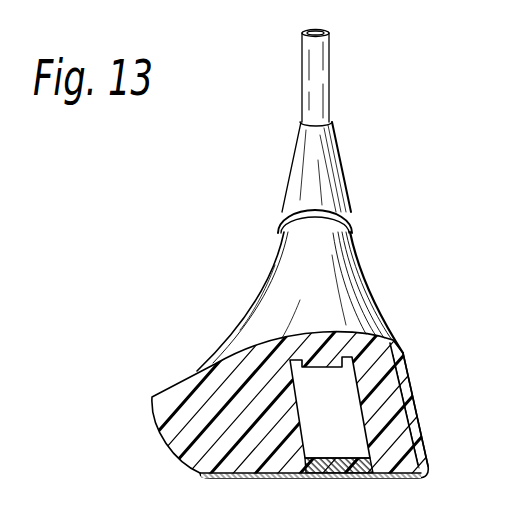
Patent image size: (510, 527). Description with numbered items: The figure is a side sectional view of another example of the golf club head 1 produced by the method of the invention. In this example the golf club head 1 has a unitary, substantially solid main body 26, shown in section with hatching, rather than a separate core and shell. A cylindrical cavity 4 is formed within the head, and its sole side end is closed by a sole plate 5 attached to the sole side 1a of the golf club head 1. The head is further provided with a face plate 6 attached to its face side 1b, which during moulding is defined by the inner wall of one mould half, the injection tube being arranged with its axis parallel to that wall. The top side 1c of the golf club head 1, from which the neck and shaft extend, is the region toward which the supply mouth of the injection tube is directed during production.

The golf club head 1 is at (253, 302).
The sole side 1a is at (271, 479).
The face side 1b is at (410, 378).
The top side 1c is at (343, 305).
The cylindrical cavity 4 is at (352, 427).
The sole plate 5 is at (352, 477).
The face plate 6 is at (414, 414).
The main body 26 is at (192, 386).